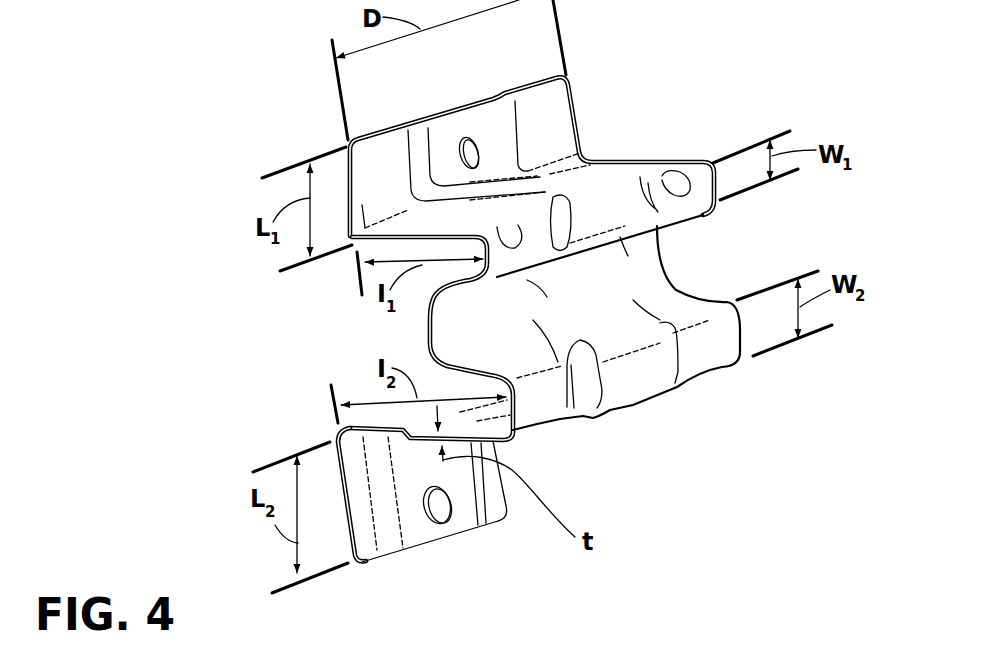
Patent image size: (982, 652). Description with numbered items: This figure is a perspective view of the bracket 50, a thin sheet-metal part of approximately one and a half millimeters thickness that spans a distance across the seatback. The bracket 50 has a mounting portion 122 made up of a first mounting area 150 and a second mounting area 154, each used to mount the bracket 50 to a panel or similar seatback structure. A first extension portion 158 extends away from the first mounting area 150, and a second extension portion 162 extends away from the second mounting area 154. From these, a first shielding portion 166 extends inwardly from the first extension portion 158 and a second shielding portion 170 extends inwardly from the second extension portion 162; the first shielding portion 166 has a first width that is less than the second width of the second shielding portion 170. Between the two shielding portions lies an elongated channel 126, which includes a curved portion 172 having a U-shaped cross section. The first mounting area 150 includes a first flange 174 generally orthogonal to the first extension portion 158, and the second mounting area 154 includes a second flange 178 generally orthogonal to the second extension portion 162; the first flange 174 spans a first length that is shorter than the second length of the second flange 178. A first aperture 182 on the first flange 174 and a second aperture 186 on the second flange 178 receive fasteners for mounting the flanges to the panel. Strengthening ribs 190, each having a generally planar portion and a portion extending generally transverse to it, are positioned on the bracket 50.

The bracket 50 is at (176, 226).
The mounting portion 122 is at (348, 242).
The elongated channel 126 is at (457, 323).
The first mounting area 150 is at (555, 133).
The second mounting area 154 is at (465, 484).
The first extension portion 158 is at (510, 193).
The second extension portion 162 is at (513, 420).
The first shielding portion 166 is at (660, 237).
The second shielding portion 170 is at (652, 375).
The curved portion 172 is at (432, 343).
The first flange 174 is at (377, 175).
The second flange 178 is at (417, 510).
The first aperture 182 is at (466, 140).
The second aperture 186 is at (447, 512).
The strengthening rib 190 is at (557, 226).